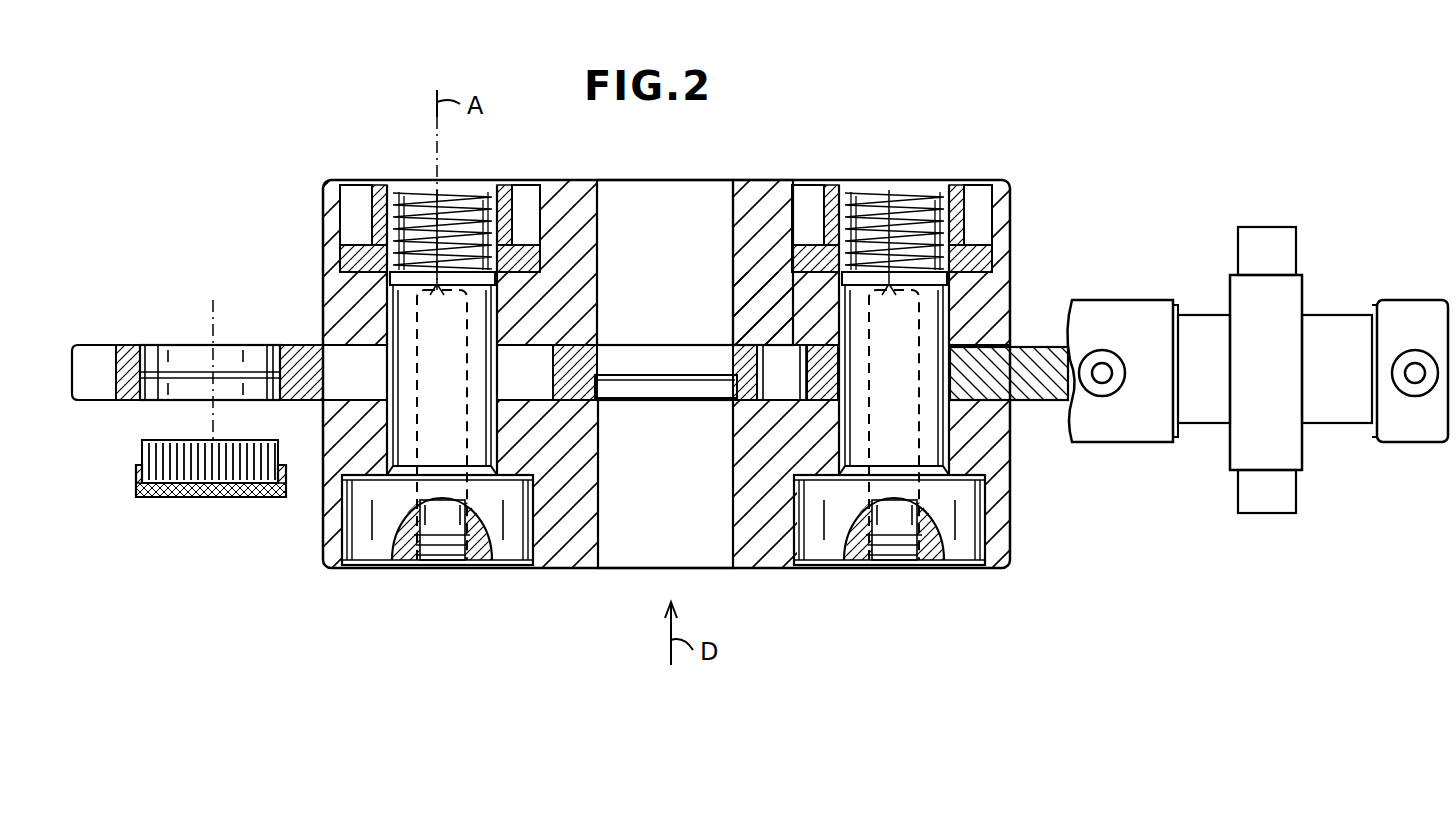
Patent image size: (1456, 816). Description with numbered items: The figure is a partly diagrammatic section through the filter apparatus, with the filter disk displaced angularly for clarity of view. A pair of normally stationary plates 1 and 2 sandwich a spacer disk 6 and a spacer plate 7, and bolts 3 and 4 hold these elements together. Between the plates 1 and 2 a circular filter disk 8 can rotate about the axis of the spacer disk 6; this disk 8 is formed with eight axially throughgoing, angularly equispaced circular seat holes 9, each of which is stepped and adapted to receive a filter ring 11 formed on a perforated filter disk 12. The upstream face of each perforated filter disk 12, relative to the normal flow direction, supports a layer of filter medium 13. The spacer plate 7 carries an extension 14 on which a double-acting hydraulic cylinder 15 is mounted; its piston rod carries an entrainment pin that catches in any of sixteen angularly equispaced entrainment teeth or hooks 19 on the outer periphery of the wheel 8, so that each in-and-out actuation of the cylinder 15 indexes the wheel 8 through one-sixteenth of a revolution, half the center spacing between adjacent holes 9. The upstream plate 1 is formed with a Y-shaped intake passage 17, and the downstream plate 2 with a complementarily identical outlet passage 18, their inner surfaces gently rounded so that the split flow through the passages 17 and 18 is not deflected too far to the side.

The upstream plate 1 is at (570, 545).
The downstream plate 2 is at (764, 200).
The bolt 3 is at (448, 570).
The bolt 4 is at (906, 570).
The spacer disk 6 is at (345, 355).
The spacer plate 7 is at (1025, 370).
The filter disk 8 is at (285, 352).
The seat hole 9 is at (156, 345).
The filter ring 11 is at (140, 485).
The perforated filter disk 12 is at (150, 445).
The filter medium 13 is at (203, 497).
The extension 14 is at (1270, 500).
The double-acting hydraulic cylinder 15 is at (1338, 330).
The intake passage 17 is at (665, 484).
The outlet passage 18 is at (665, 262).
The entrainment tooth 19 is at (95, 360).